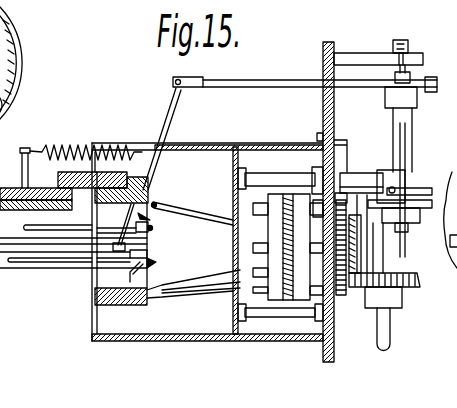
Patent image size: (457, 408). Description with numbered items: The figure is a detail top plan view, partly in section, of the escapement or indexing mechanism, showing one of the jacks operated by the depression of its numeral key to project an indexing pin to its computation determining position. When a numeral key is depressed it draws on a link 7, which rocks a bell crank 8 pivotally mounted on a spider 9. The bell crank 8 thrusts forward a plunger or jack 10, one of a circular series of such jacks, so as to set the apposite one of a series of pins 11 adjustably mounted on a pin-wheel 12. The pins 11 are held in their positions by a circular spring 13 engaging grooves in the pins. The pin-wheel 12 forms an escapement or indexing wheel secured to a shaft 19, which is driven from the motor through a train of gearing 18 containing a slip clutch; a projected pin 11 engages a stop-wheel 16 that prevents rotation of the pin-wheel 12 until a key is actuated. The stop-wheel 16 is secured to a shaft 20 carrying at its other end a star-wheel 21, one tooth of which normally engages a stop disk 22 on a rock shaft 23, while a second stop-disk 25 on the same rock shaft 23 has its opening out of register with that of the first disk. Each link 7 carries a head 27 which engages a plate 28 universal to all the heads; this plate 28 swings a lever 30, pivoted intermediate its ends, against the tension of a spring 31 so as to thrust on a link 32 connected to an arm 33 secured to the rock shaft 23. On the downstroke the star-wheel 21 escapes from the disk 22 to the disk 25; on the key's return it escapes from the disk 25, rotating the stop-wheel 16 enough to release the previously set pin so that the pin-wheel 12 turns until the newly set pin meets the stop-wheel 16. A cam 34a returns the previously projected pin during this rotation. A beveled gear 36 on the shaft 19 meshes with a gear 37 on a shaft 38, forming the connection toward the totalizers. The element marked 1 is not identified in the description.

The adjusting block 1 is at (385, 105).
The link 7 is at (22, 229).
The bell crank 8 is at (151, 229).
The spider 9 is at (148, 191).
The plunger or jack 10 is at (190, 211).
The pin 11 is at (256, 220).
The pin-wheel 12 is at (273, 186).
The circular spring 13 is at (288, 301).
The stop-wheel 16 is at (2, 33).
The train of gearing 18 is at (341, 206).
The shaft 19 is at (313, 248).
The shaft 20 is at (368, 182).
The star-wheel 21 is at (406, 149).
The stop disk 22 is at (413, 192).
The rock shaft 23 is at (408, 113).
The second stop-disk 25 is at (414, 209).
The head 27 is at (150, 259).
The plate 28 is at (95, 278).
The lever 30 is at (167, 121).
The spring 31 is at (75, 147).
The link 32 is at (256, 82).
The arm 33 is at (427, 88).
The cam 34a is at (323, 207).
The beveled gear 36 is at (347, 290).
The gear 37 is at (400, 274).
The shaft 38 is at (390, 331).